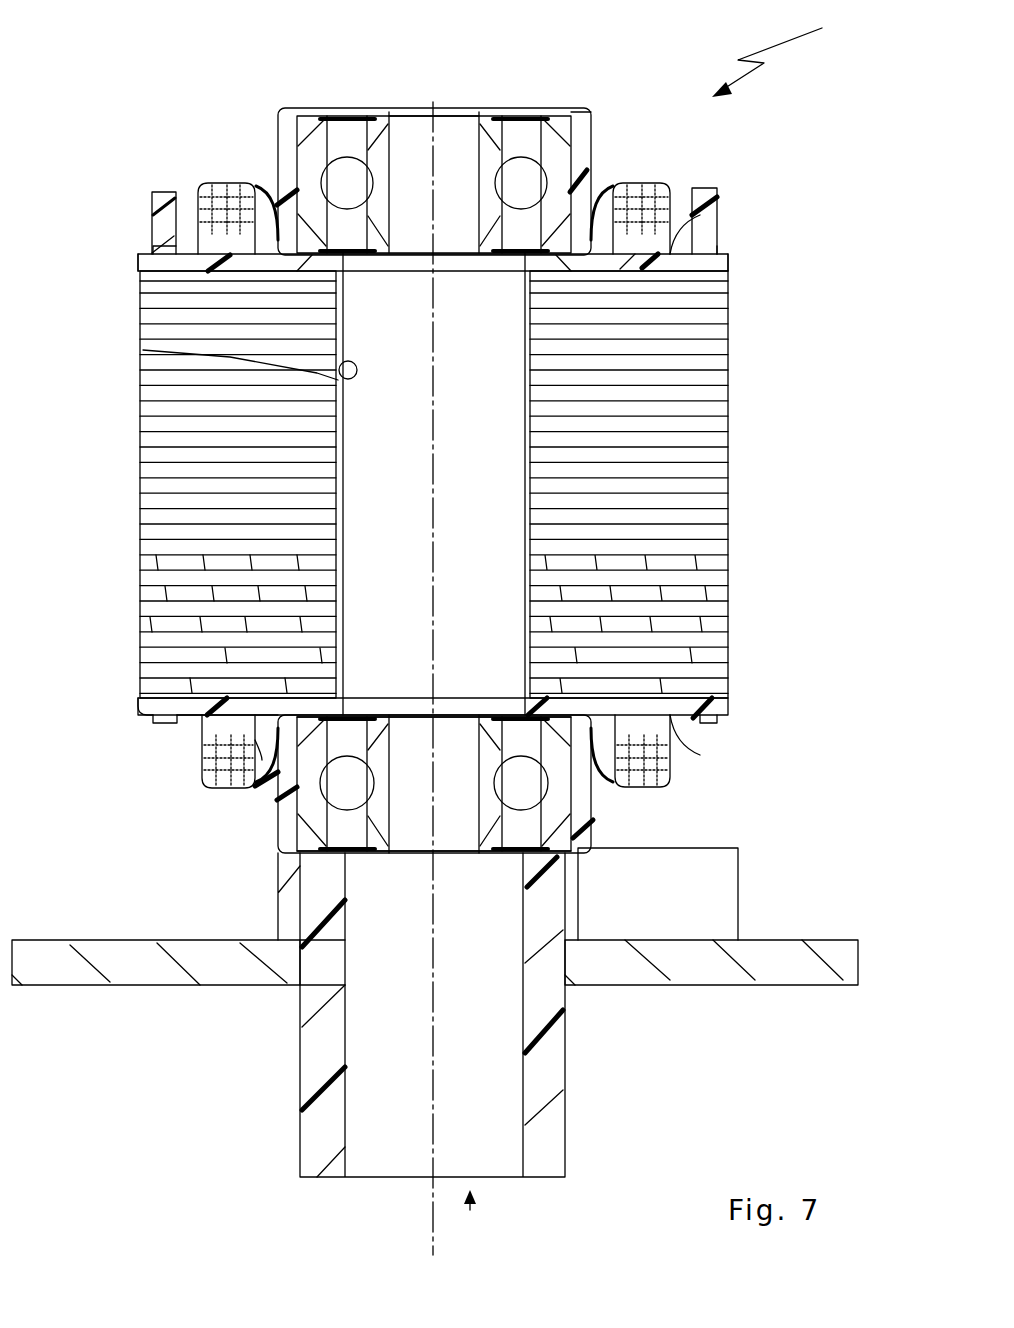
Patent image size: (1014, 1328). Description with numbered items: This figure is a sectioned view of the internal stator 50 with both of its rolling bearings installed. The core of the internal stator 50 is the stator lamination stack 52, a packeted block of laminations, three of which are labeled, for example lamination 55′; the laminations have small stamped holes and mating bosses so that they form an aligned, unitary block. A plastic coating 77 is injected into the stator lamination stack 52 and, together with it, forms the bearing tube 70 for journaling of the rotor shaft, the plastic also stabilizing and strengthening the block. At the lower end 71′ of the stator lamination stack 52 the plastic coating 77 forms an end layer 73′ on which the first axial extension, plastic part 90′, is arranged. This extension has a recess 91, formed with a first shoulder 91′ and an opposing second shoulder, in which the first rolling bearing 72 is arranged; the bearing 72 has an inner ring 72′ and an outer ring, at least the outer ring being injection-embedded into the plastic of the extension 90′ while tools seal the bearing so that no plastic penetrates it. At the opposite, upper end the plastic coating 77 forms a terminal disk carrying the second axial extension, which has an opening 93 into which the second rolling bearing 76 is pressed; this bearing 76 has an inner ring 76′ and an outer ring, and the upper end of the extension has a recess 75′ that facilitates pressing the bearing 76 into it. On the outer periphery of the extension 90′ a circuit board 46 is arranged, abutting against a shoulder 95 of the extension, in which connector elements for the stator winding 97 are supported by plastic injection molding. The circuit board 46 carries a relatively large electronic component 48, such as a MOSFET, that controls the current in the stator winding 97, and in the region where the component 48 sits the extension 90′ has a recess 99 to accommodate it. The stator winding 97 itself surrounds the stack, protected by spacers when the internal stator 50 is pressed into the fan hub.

The internal stator 50 is at (882, 41).
The recess 75′ is at (344, 98).
The bearing 76 is at (414, 176).
The inner ring 76′ is at (484, 108).
The opening 93 is at (589, 162).
The stator winding 97 is at (223, 184).
The lower end 71′ is at (673, 753).
The stator lamination stack 52 is at (725, 462).
The end layer 73′ is at (728, 705).
The plastic coating 77 is at (143, 350).
The lamination 55′ is at (728, 615).
The first shoulder 91′ is at (290, 740).
The recess 91 is at (263, 757).
The bearing 72 is at (292, 930).
The inner ring 72′ is at (297, 820).
The recess 99 is at (606, 845).
The electronic component 48 is at (725, 907).
The shoulder 95 is at (290, 923).
The plastic part 90′ is at (545, 1082).
The circuit board 46 is at (800, 970).
The bearing tube 70 is at (470, 1210).